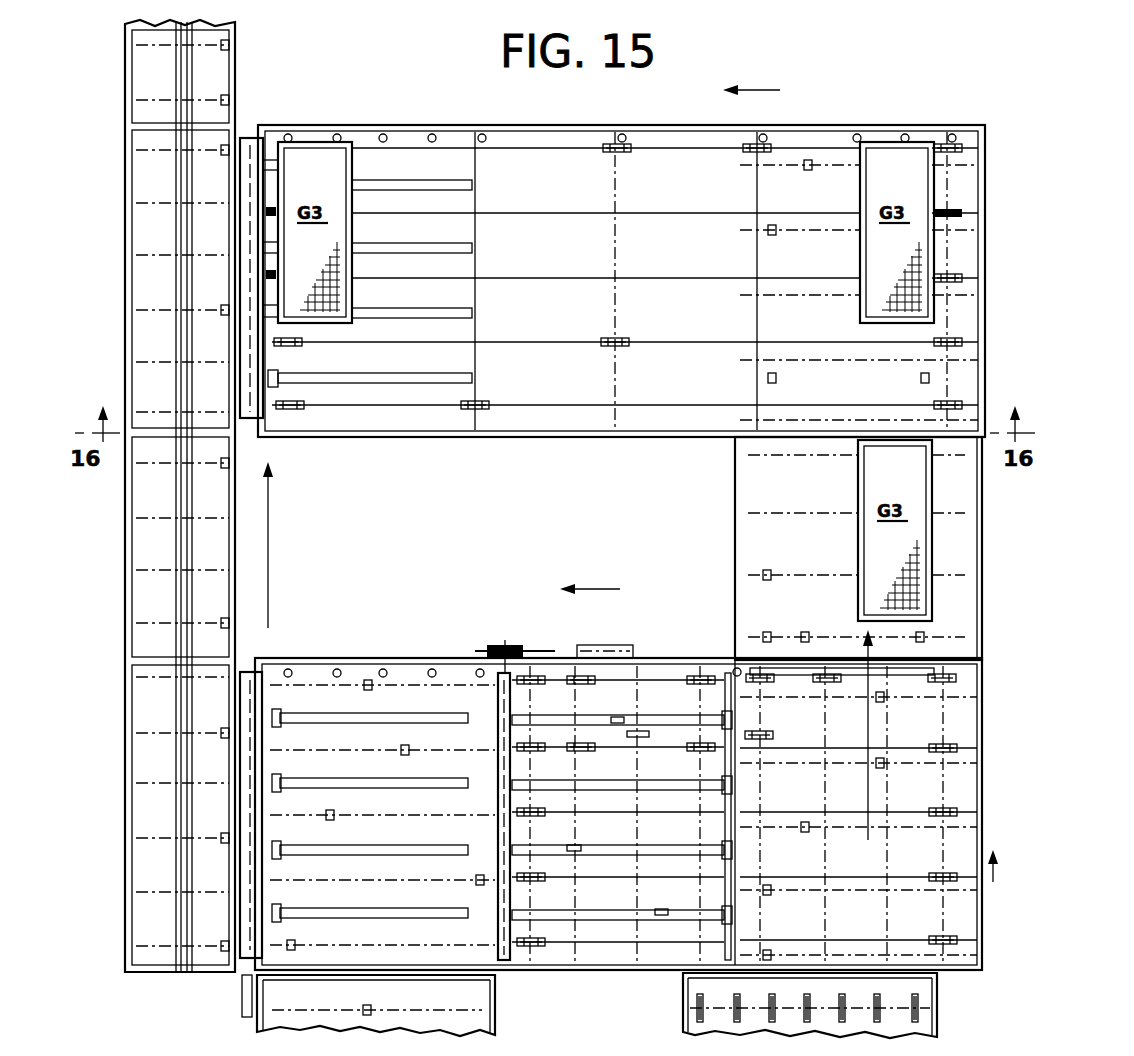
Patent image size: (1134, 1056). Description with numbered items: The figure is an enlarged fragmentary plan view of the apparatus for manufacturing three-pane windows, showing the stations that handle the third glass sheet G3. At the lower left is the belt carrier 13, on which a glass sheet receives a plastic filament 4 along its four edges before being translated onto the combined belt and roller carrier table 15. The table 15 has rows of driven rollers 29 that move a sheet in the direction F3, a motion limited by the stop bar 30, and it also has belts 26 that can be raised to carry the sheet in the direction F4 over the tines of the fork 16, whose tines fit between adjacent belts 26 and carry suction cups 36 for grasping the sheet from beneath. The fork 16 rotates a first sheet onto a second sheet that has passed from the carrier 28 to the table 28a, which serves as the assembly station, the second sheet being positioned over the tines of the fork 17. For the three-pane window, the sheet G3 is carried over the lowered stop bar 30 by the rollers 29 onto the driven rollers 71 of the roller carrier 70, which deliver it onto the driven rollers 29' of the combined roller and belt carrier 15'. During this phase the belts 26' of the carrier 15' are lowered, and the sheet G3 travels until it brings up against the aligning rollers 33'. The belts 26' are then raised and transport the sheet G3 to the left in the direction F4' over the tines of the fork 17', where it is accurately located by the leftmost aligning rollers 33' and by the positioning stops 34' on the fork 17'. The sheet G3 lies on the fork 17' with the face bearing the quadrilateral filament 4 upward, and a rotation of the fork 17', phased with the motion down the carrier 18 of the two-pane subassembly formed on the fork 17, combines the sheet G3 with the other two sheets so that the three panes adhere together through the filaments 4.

The belt carrier 13 is at (683, 1000).
The combined belt and roller carrier table 15 is at (635, 814).
The combined roller and belt carrier 15' is at (621, 259).
The fork 16 is at (560, 714).
The fork 17 is at (370, 780).
The fork 17' is at (370, 242).
The carrier 18 is at (132, 858).
The belts 26 is at (744, 794).
The belts 26' is at (625, 281).
The carrier 28 is at (495, 1013).
The table 28a is at (328, 658).
The driven rollers 29 is at (823, 826).
The driven rollers 29' is at (816, 280).
The stop bar 30 is at (913, 674).
The aligning rollers 33' is at (620, 117).
The positioning stops 34' is at (279, 258).
The suction cups 36 is at (617, 715).
The filament 4 is at (350, 170).
The roller carrier 70 is at (983, 553).
The driven rollers 71 is at (772, 636).
The sheet G3 is at (601, 362).
The direction F3 is at (1005, 872).
The direction F4 is at (590, 580).
The direction F4' is at (751, 80).